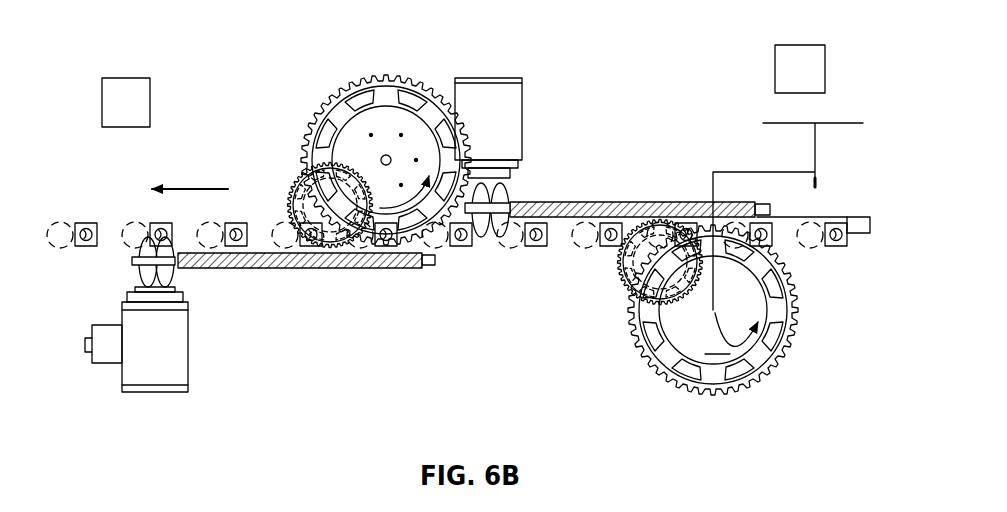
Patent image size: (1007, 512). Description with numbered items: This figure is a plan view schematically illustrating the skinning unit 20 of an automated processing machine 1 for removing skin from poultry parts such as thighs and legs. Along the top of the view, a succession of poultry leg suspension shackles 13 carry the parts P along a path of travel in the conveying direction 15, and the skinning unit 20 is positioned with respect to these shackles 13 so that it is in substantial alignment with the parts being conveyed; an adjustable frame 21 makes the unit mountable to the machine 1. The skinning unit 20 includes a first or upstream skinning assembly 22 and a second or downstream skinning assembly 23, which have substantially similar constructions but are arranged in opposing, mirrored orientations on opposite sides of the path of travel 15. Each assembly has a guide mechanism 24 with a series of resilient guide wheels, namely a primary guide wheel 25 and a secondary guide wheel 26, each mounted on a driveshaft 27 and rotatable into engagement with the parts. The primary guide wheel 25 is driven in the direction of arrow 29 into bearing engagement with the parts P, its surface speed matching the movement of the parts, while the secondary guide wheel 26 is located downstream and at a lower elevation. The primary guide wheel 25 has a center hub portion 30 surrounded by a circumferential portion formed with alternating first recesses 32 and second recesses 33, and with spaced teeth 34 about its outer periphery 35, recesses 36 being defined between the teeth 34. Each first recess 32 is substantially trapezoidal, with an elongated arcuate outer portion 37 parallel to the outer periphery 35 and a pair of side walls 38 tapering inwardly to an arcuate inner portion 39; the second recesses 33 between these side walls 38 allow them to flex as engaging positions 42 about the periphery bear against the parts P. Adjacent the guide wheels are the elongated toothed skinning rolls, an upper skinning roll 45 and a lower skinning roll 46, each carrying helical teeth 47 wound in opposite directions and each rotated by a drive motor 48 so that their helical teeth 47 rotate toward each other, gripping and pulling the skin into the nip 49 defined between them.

The machine 1 is at (305, 357).
The poultry leg suspension shackle 13 is at (83, 249).
The conveying direction 15 is at (197, 188).
The animal part P is at (75, 224).
The skinning unit 20 is at (556, 231).
The adjustable frame 21 is at (828, 70).
The first skinning assembly 22 is at (528, 147).
The second skinning assembly 23 is at (698, 345).
The guide mechanism 24 is at (327, 78).
The primary guide wheel 25 is at (751, 310).
The secondary guide wheel 26 is at (398, 76).
The driveshaft 27 is at (759, 391).
The direction of rotation 29 is at (420, 213).
The center hub portion 30 is at (757, 300).
The first recess 32 is at (795, 300).
The second recess 33 is at (785, 273).
The tooth 34 is at (788, 348).
The outer periphery 35 is at (765, 378).
The recess between teeth 36 is at (792, 337).
The arcuate outer portion 37 is at (638, 348).
The side wall 38 is at (357, 78).
The arcuate inner portion 39 is at (325, 110).
The engaging position 42 is at (657, 370).
The upper skinning roll 45 is at (267, 250).
The lower skinning roll 46 is at (403, 276).
The helical teeth 47 is at (297, 270).
The drive motor 48 is at (515, 195).
The nip 49 is at (350, 270).